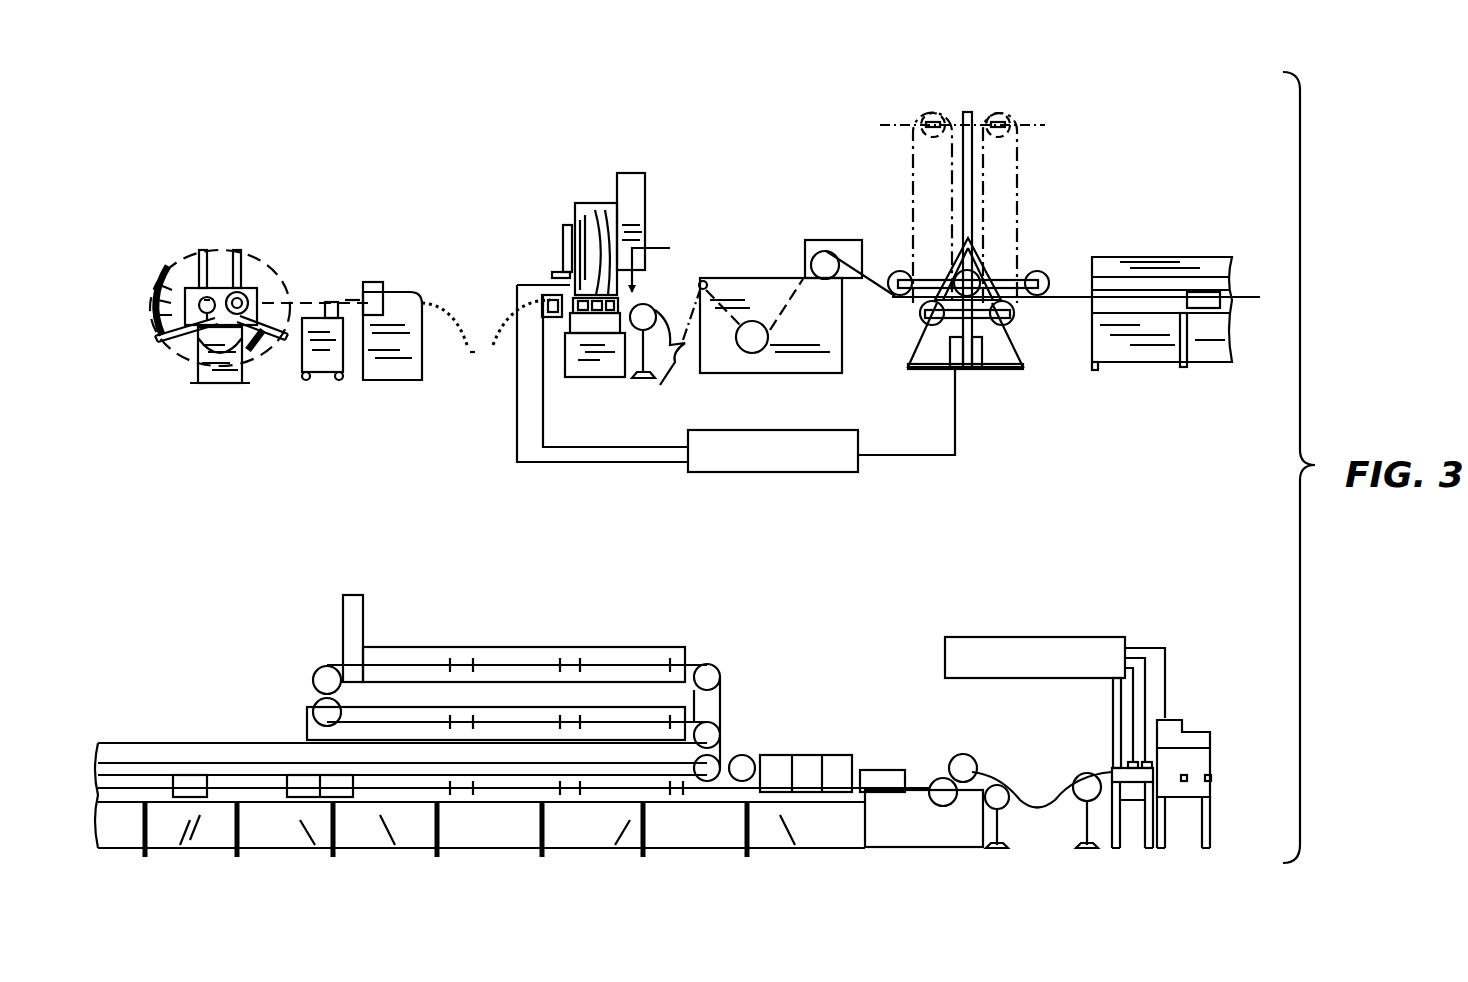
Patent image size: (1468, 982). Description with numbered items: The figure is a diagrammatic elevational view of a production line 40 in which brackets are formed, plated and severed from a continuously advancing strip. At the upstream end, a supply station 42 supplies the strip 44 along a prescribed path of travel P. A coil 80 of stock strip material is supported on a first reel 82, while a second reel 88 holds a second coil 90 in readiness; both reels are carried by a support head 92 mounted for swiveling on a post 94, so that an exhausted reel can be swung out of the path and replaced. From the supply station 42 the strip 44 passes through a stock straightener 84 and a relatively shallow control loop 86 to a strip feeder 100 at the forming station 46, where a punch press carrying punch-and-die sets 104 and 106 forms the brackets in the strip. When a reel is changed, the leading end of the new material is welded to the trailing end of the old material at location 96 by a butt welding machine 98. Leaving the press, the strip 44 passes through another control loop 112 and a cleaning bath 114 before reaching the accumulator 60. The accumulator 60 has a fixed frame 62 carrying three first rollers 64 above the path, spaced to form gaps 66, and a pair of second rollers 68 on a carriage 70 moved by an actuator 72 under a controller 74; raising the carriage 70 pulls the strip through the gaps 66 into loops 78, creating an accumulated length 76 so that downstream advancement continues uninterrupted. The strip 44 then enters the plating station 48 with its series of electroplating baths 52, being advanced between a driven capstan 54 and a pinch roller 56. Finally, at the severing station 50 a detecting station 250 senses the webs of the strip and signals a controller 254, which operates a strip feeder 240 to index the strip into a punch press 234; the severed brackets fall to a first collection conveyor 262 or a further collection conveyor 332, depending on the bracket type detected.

The production line 40 is at (416, 288).
The supply station 42 is at (222, 383).
The strip 44 is at (294, 302).
The forming station 46 is at (598, 378).
The plating station 48 is at (1140, 362).
The severing station 50 is at (1150, 832).
The electroplating baths 52 is at (1220, 367).
The driven capstan 54 is at (963, 756).
The pinch roller 56 is at (940, 803).
The accumulator 60 is at (978, 378).
The fixed frame 62 is at (912, 366).
The first rollers 64 is at (896, 270).
The gaps 66 is at (922, 298).
The second rollers 68 is at (1040, 348).
The carriage 70 is at (975, 112).
The actuator 72 is at (955, 360).
The controller 74 is at (712, 472).
The accumulated length 76 is at (1022, 152).
The loops 78 is at (912, 178).
The coil 80 is at (166, 273).
The first reel 82 is at (203, 250).
The stock straightener 84 is at (392, 380).
The control loop 86 is at (491, 350).
The second reel 88 is at (238, 250).
The second coil 90 is at (264, 358).
The support head 92 is at (160, 297).
The post 94 is at (200, 372).
The trailing end location 96 is at (350, 300).
The butt welding machine 98 is at (327, 372).
The strip feeder 100 is at (542, 305).
The punch-and-die set 104 is at (583, 290).
The punch-and-die set 106 is at (607, 232).
The control loop 112 is at (665, 355).
The cleaning bath 114 is at (795, 373).
The punch press 234 is at (1205, 728).
The strip feeder 240 is at (1135, 800).
The detecting station 250 is at (1110, 768).
The controller 254 is at (1027, 637).
The first collection conveyor 262 is at (1212, 780).
The further collection conveyor 332 is at (1190, 778).
The path of travel P is at (315, 298).